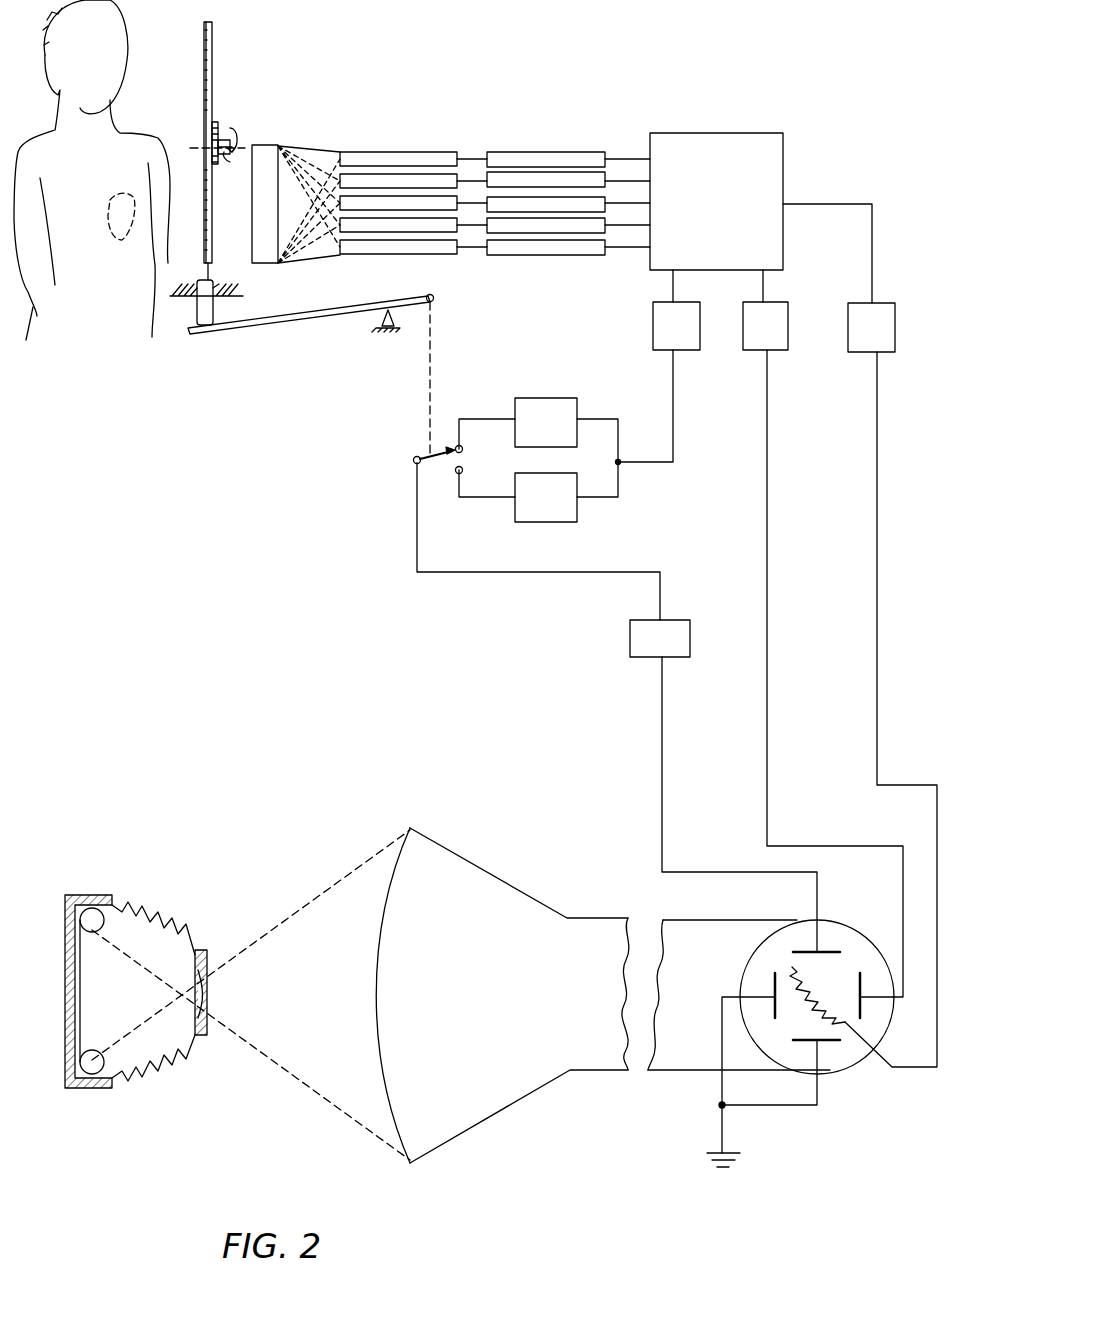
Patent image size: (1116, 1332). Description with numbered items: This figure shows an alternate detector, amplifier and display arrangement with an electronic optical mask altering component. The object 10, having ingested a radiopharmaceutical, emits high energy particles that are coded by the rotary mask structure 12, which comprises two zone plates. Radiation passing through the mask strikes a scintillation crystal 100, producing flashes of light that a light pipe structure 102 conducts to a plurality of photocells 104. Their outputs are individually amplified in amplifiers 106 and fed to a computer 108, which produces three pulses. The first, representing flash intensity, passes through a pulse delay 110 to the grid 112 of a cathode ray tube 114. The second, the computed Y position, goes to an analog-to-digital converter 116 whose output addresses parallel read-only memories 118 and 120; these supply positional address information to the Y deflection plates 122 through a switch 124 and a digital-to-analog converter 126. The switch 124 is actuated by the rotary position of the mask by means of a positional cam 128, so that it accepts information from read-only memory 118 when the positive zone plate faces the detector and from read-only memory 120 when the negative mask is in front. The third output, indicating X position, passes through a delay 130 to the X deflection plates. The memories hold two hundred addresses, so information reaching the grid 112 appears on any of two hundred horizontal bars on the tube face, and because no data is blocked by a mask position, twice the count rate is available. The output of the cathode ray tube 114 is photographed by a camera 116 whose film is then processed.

The object 10 is at (143, 104).
The rotary mask structure 12 is at (222, 98).
The scintillation crystal 100 is at (262, 147).
The light pipe structure 102 is at (312, 158).
The photocells 104 is at (413, 180).
The amplifiers 106 is at (540, 180).
The computer 108 is at (714, 132).
The pulse delay 110 is at (848, 308).
The grid 112 is at (810, 983).
The cathode ray tube 114 is at (570, 1097).
The analog-to-digital converter 116 is at (653, 306).
The read-only memory 118 is at (556, 398).
The read-only memory 120 is at (568, 522).
The Y deflection plates 122 is at (800, 1032).
The switch 124 is at (436, 464).
The digital-to-analog converter 126 is at (630, 641).
The positional cam 128 is at (215, 300).
The delay 130 is at (743, 308).